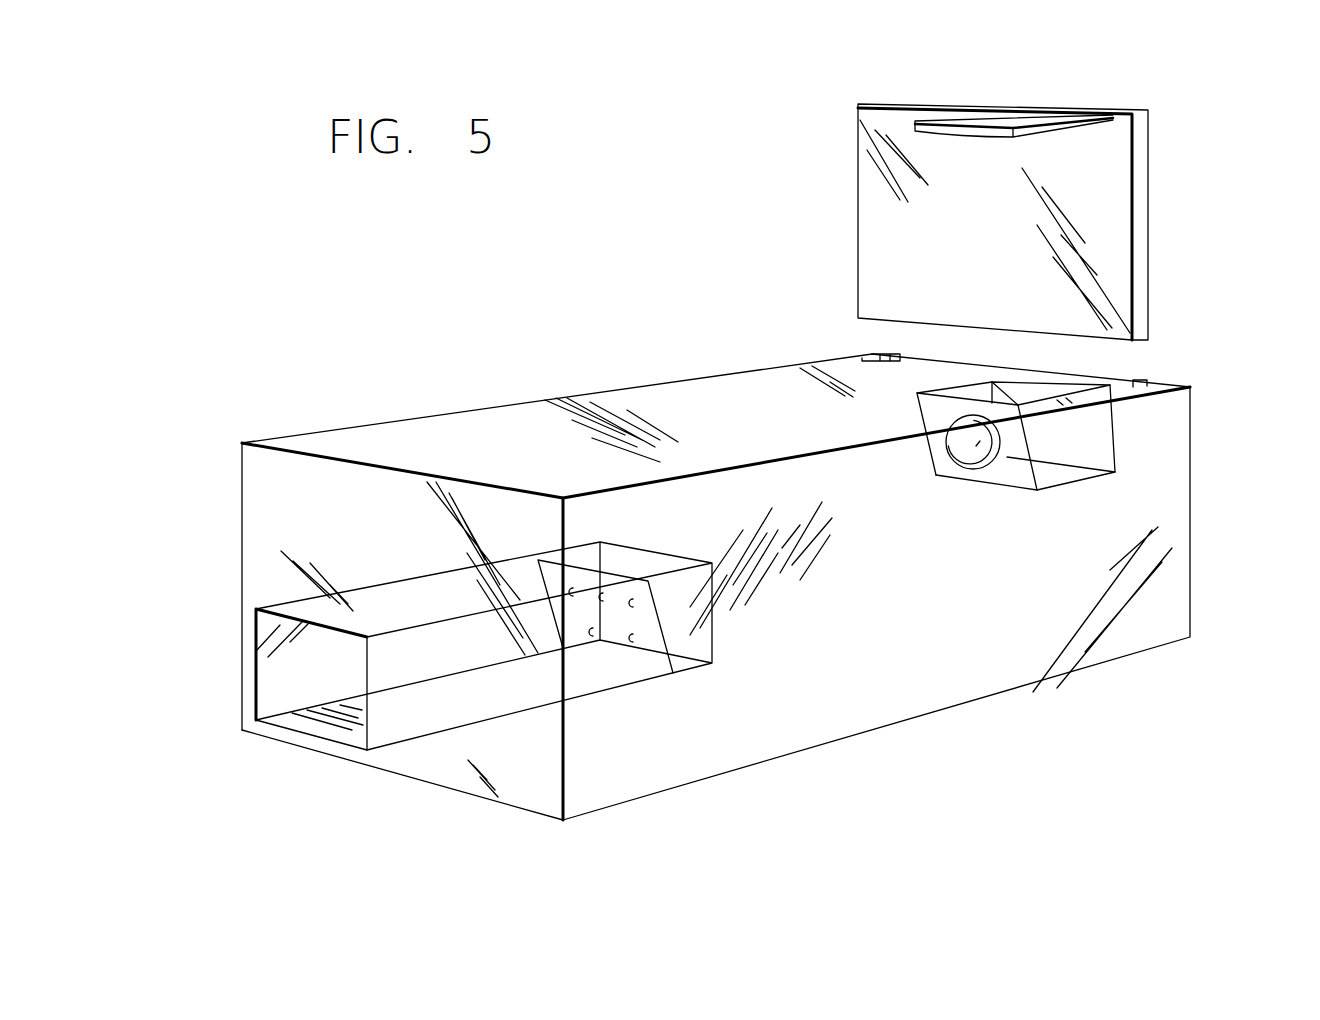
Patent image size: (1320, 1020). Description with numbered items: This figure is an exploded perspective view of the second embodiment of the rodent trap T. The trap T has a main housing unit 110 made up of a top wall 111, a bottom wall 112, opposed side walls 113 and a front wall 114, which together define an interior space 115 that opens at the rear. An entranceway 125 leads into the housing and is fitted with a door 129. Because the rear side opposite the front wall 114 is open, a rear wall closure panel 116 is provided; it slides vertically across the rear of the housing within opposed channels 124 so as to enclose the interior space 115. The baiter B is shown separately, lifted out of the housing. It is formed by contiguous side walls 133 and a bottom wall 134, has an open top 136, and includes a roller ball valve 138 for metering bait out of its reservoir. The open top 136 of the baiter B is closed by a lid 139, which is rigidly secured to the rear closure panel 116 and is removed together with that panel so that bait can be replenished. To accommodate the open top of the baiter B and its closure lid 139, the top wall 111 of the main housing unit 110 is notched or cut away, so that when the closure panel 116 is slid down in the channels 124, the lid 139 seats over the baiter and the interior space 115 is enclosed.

The main housing unit 110 is at (312, 405).
The top wall 111 is at (500, 423).
The bottom wall 112 is at (442, 768).
The side walls 113 is at (955, 663).
The front wall 114 is at (260, 500).
The interior space 115 is at (785, 497).
The rear wall closure panel 116 is at (1113, 180).
The opposed channels 124 is at (870, 352).
The entranceway 125 is at (293, 686).
The door 129 is at (652, 640).
The side walls 133 is at (1015, 447).
The bottom wall 134 is at (1053, 475).
The open top 136 is at (1000, 403).
The roller ball valve 138 is at (953, 448).
The lid 139 is at (1017, 120).
The trap T is at (505, 312).
The baiter B is at (1117, 365).